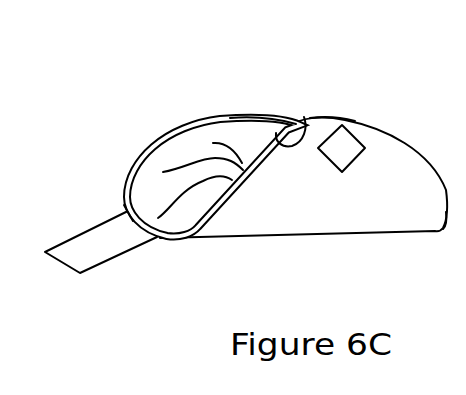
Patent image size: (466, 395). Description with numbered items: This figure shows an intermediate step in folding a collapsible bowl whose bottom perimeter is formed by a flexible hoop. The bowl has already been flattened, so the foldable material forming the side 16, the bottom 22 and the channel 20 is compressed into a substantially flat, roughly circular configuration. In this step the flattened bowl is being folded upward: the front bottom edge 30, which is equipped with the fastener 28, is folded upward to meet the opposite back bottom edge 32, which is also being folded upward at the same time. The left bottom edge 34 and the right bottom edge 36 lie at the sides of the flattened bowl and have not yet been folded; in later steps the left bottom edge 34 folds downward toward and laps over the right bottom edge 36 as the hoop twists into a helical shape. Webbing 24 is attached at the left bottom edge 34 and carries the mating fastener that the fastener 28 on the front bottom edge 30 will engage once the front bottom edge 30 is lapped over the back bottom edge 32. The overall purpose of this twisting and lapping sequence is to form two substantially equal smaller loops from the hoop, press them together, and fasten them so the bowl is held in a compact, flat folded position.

The side 16 is at (187, 155).
The channel 20 is at (304, 117).
The bottom 22 is at (325, 212).
The webbing 24 is at (110, 250).
The fastener 28 is at (345, 147).
The front bottom edge 30 is at (343, 120).
The back bottom edge 32 is at (264, 122).
The left bottom edge 34 is at (132, 220).
The right bottom edge 36 is at (438, 231).